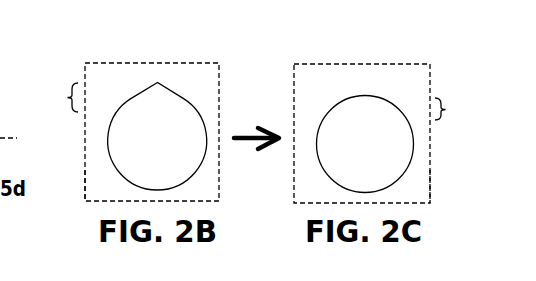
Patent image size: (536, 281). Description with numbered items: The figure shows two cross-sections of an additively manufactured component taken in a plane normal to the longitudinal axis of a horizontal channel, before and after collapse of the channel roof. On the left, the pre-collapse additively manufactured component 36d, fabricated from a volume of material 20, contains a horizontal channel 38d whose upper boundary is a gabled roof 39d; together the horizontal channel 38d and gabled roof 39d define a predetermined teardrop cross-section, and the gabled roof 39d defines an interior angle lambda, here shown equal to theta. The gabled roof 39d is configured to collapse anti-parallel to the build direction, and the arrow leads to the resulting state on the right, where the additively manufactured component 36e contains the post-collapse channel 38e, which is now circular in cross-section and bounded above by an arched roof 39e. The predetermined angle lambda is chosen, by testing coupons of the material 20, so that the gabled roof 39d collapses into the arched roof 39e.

In FIG. 2B, the material 20 is at (180, 82).
In FIG. 2C, the material 20 is at (375, 82).
In FIG. 2B, the horizontal channel 38d is at (156, 82).
In FIG. 2B, the gabled roof 39d is at (50, 98).
In FIG. 2B, the additively manufactured component 36d is at (90, 188).
In FIG. 2C, the post-collapse channel 38e is at (343, 100).
In FIG. 2C, the arched roof 39e is at (462, 111).
In FIG. 2C, the additively manufactured component 36e is at (422, 188).